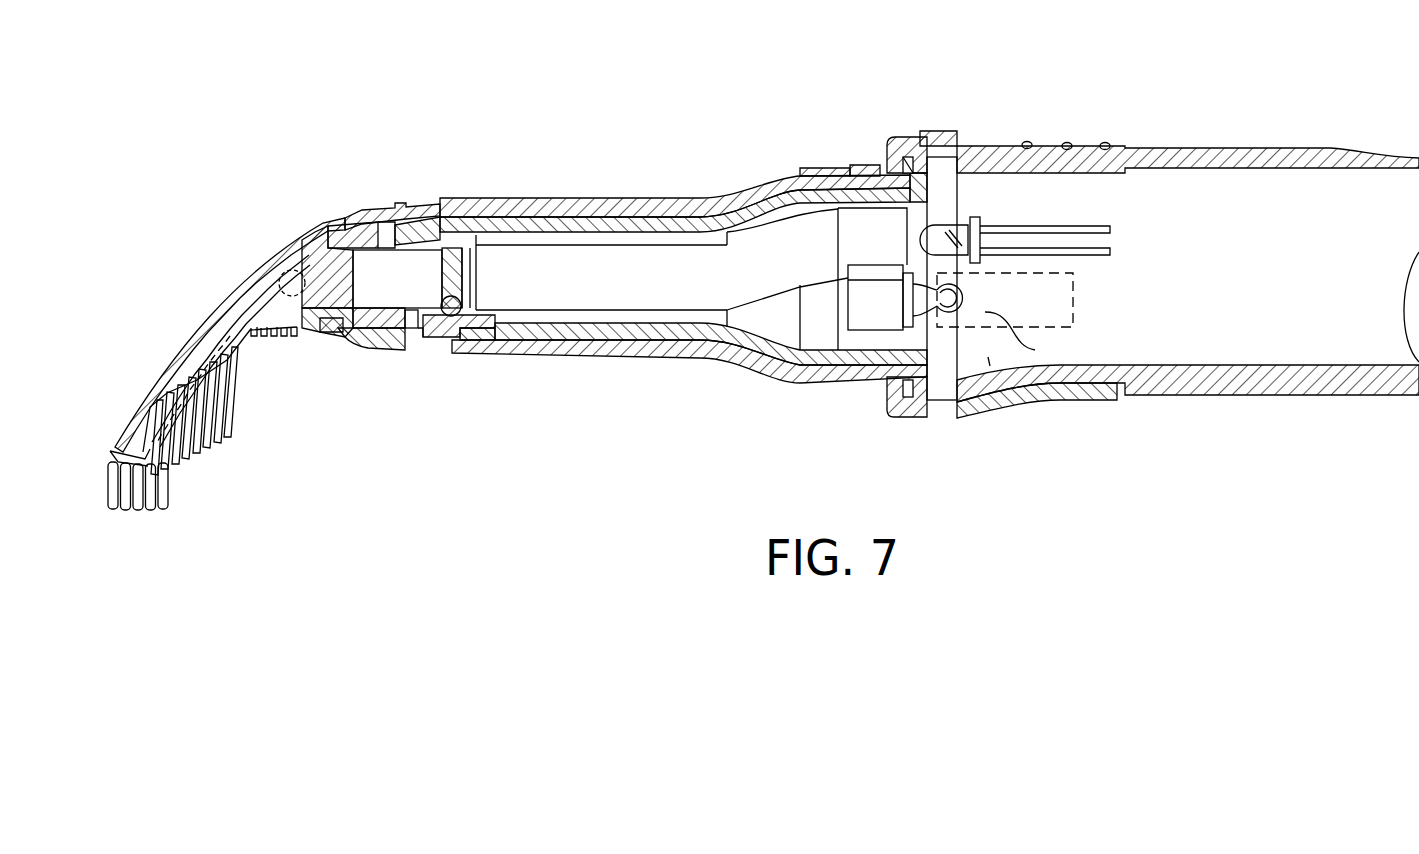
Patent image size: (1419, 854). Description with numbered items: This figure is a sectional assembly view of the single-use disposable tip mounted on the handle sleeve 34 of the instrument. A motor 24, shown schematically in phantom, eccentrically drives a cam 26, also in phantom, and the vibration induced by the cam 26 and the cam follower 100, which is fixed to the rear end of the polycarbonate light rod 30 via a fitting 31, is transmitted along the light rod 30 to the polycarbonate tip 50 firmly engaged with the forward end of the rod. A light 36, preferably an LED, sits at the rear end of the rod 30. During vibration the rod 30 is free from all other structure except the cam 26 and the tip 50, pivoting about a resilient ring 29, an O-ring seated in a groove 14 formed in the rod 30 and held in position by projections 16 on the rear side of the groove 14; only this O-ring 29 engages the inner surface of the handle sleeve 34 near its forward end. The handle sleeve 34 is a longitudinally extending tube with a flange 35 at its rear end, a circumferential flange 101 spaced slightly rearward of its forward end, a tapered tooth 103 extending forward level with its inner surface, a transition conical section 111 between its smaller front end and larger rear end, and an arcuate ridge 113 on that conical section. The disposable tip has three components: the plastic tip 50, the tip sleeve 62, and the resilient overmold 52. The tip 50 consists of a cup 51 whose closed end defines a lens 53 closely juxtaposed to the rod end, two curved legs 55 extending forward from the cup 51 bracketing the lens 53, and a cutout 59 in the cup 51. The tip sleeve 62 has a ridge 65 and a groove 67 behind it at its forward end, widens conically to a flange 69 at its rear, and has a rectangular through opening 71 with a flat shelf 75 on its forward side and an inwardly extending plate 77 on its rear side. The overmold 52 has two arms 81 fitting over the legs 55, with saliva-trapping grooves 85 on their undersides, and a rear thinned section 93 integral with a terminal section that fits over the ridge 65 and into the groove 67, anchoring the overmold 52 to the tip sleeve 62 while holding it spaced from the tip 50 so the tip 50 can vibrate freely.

The groove 14 is at (455, 252).
The projections 16 is at (468, 290).
The motor 24 is at (1058, 298).
The cam 26 is at (985, 345).
The resilient ring 29 is at (460, 207).
The light rod 30 is at (690, 288).
The fitting 31 is at (872, 318).
The handle sleeve 34 is at (655, 350).
The flange 35 is at (927, 172).
The light 36 is at (975, 205).
The plastic tip 50 is at (368, 347).
The cup 51 is at (327, 340).
The overmold 52 is at (397, 208).
The lens 53 is at (293, 247).
The legs 55 is at (237, 320).
The cutout 59 is at (360, 207).
The tip sleeve 62 is at (610, 355).
The ridge 65 is at (453, 347).
The groove 67 is at (493, 353).
The flange 69 is at (898, 135).
The rectangular through opening 71 is at (836, 178).
The flat shelf 75 is at (787, 177).
The plate 77 is at (843, 187).
The arms 81 is at (153, 403).
The grooves 85 is at (197, 420).
The thinned section 93 is at (425, 347).
The cam follower 100 is at (1035, 350).
The circumferential flange 101 is at (447, 352).
The tooth 103 is at (427, 207).
The conical section 111 is at (725, 198).
The arcuate ridge 113 is at (840, 178).